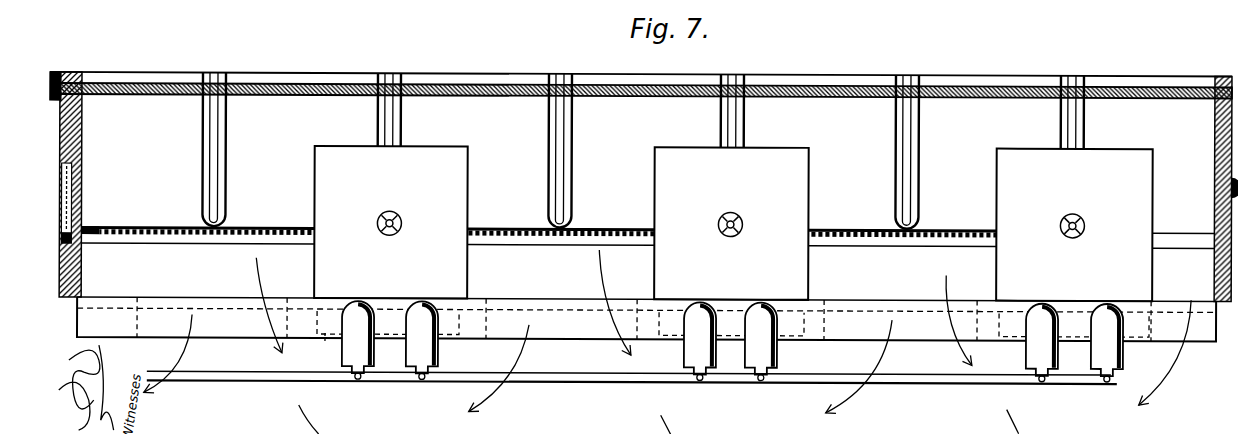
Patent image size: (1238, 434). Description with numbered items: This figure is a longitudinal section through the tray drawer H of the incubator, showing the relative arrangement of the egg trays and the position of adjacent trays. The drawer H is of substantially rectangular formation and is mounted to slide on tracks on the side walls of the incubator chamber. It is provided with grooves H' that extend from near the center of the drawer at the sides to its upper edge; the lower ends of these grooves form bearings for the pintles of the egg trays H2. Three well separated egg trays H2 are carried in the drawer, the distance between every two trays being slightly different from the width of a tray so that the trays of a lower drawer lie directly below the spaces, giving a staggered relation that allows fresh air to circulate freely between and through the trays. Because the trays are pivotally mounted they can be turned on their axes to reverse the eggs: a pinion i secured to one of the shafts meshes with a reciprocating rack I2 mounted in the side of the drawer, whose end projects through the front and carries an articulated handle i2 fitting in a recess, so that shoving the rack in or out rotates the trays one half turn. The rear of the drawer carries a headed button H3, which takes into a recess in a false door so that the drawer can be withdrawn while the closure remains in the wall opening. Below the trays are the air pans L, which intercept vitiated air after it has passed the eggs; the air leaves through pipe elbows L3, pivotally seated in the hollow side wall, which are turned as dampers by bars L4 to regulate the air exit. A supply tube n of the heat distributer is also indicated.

The drawer H is at (731, 100).
The grooves H' is at (560, 137).
The egg trays H2 is at (733, 223).
The headed button H3 is at (1230, 182).
The pinion i is at (460, 309).
The articulated handle i2 is at (82, 186).
The reciprocating rack I2 is at (190, 243).
The air pans L is at (653, 348).
The pipe elbows L3 is at (440, 352).
The bars L4 is at (553, 380).
The supply tube n is at (548, 318).